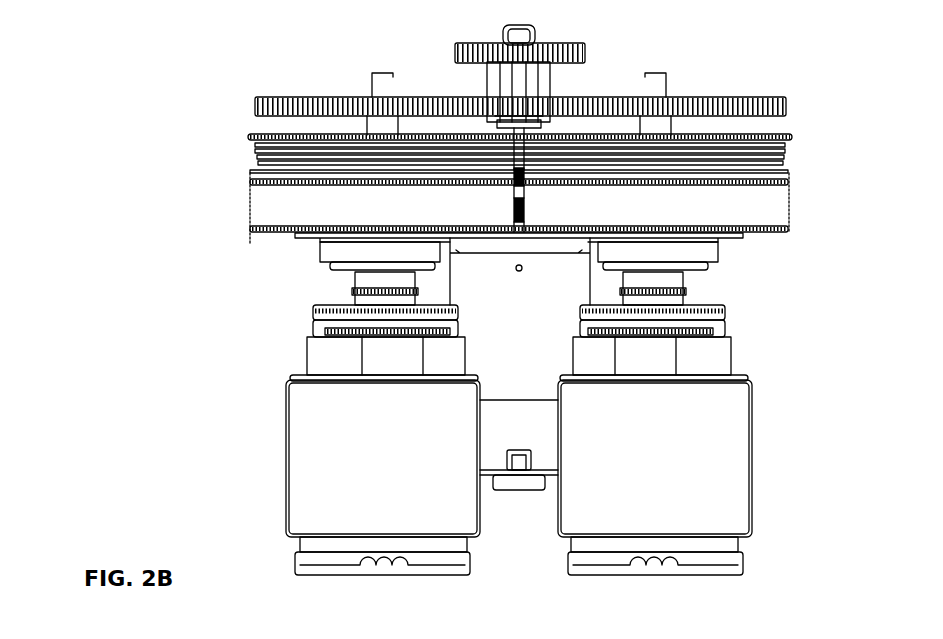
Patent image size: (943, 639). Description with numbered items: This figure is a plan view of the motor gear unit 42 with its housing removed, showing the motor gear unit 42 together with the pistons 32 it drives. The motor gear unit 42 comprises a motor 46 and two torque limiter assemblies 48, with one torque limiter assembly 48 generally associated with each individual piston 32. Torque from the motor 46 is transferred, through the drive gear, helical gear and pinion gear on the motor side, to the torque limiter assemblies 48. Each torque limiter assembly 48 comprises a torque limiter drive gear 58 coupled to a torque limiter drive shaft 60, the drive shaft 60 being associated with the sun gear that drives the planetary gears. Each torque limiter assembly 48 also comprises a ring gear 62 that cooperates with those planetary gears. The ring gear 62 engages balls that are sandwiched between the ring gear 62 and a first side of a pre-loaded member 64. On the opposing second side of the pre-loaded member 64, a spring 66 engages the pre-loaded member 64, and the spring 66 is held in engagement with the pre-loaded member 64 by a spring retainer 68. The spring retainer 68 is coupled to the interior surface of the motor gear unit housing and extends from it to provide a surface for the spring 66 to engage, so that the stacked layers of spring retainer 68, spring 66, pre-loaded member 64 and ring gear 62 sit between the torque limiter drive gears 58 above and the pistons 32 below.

The piston 32 is at (456, 565).
The motor gear unit 42 is at (480, 429).
The motor 46 is at (540, 445).
The torque limiter assembly 48 is at (292, 72).
The torque limiter drive gear 58 is at (262, 97).
The torque limiter drive shaft 60 is at (374, 73).
The ring gear 62 is at (290, 236).
The pre-loaded member 64 is at (294, 208).
The spring 66 is at (260, 182).
The spring retainer 68 is at (248, 138).